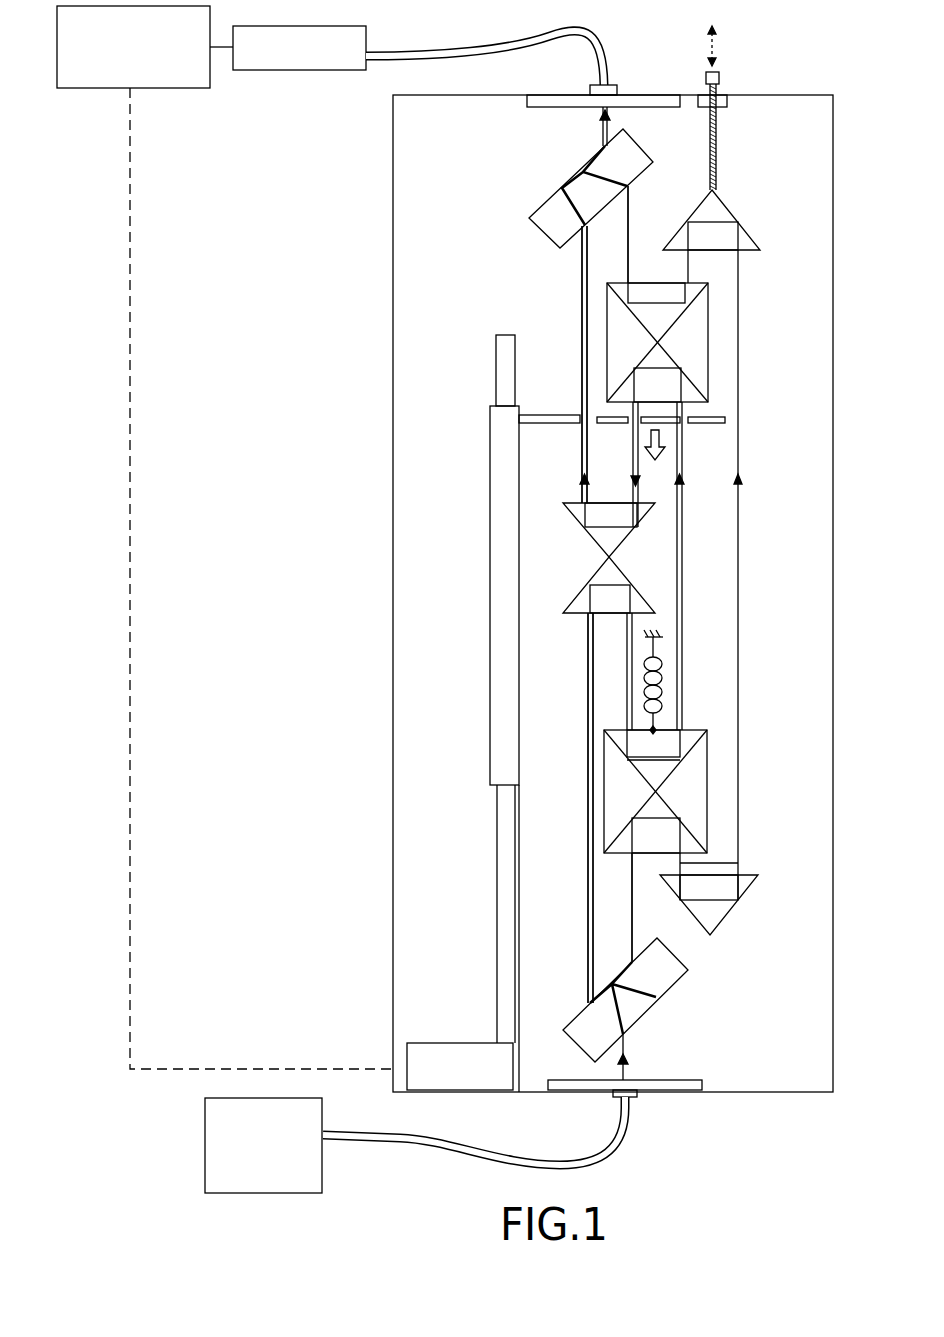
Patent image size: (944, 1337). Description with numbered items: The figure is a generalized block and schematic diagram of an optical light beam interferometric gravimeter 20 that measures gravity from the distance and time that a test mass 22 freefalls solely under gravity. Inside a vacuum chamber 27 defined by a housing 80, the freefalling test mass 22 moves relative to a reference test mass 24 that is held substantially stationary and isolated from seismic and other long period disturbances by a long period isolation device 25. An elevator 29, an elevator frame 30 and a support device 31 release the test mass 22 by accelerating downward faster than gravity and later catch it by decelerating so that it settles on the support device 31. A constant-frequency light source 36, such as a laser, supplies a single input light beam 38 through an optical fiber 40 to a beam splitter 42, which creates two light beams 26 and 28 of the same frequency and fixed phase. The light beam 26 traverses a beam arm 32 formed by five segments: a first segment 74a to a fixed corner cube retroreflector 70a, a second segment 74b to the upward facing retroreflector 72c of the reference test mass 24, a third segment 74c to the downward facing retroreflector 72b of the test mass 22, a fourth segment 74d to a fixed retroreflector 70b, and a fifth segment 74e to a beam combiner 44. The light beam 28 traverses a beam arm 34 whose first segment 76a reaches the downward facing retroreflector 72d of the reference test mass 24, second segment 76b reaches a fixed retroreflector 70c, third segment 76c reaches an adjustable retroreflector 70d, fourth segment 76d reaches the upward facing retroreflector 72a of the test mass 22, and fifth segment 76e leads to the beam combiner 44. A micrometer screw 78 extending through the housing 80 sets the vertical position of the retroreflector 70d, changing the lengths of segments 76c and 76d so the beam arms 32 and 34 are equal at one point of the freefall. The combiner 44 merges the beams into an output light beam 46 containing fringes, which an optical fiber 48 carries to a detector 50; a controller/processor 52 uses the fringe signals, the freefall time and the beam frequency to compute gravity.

The optical light beam interferometric gravimeter 20 is at (258, 473).
The test mass 22 is at (724, 329).
The reference test mass 24 is at (723, 779).
The long period isolation device 25 is at (664, 690).
The light beam 26 is at (582, 257).
The vacuum chamber 27 is at (437, 182).
The light beam 28 is at (626, 265).
The elevator 29 is at (460, 1042).
The elevator frame 30 is at (503, 540).
The support device 31 is at (549, 425).
The beam arm 32 is at (574, 380).
The beam arm 34 is at (642, 242).
The light source 36 is at (323, 1173).
The input light beam 38 is at (630, 1066).
The optical fiber 40 is at (625, 1140).
The beam splitter 42 is at (672, 975).
The beam combiner 44 is at (546, 212).
The output light beam 46 is at (600, 115).
The optical fiber 48 is at (499, 49).
The detector 50 is at (273, 70).
The controller/processor 52 is at (174, 88).
The corner cube retroreflector 70a is at (581, 602).
The corner cube retroreflector 70b is at (572, 508).
The corner cube retroreflector 70c is at (745, 885).
The corner cube retroreflector 70d is at (727, 207).
The upward facing retroreflector 72a is at (700, 300).
The downward facing retroreflector 72b is at (710, 397).
The upward facing retroreflector 72c is at (690, 745).
The downward facing retroreflector 72d is at (700, 835).
The first segment 74a is at (587, 696).
The second segment 74b is at (627, 618).
The third segment 74c is at (684, 494).
The fourth segment 74d is at (633, 458).
The fifth segment 74e is at (581, 312).
The first segment 76a is at (632, 882).
The second segment 76b is at (680, 863).
The third segment 76c is at (741, 612).
The fourth segment 76d is at (689, 263).
The fifth segment 76e is at (631, 198).
The micrometer screw 78 is at (717, 110).
The housing 80 is at (835, 340).